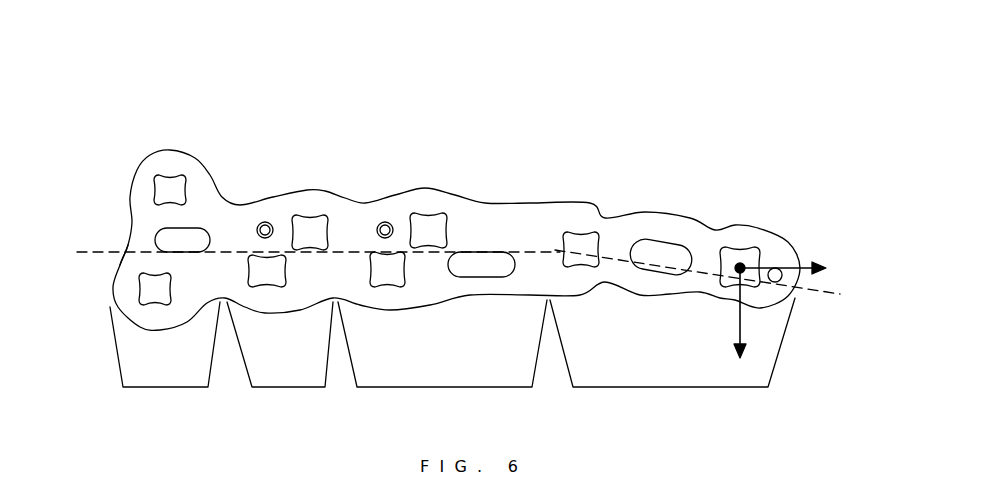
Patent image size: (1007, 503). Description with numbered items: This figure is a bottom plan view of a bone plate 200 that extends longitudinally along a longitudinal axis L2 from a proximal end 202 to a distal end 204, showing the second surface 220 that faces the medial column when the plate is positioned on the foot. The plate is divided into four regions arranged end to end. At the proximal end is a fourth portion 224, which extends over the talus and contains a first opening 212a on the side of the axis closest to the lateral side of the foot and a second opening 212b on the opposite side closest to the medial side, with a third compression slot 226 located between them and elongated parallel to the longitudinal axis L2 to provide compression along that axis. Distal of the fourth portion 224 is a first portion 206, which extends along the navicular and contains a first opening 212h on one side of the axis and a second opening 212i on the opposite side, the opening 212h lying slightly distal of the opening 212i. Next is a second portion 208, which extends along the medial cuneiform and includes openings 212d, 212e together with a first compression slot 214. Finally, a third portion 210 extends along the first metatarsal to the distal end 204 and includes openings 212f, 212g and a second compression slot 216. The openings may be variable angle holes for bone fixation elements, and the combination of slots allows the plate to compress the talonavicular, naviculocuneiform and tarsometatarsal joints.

The bone plate 200 is at (399, 118).
The proximal end 202 is at (128, 227).
The distal end 204 is at (797, 283).
The first portion 206 is at (280, 357).
The second portion 208 is at (442, 356).
The third portion 210 is at (672, 354).
The first opening 212a is at (160, 177).
The second opening 212b is at (163, 301).
The opening 212d is at (432, 215).
The opening 212e is at (383, 275).
The opening 212f is at (592, 228).
The opening 212g is at (748, 250).
The first opening 212h is at (315, 227).
The second opening 212i is at (253, 263).
The first compression slot 214 is at (483, 252).
The second compression slot 216 is at (666, 238).
The second surface 220 is at (530, 223).
The fourth portion 224 is at (165, 357).
The third compression slot 226 is at (195, 235).
The longitudinal axis L2 is at (458, 264).